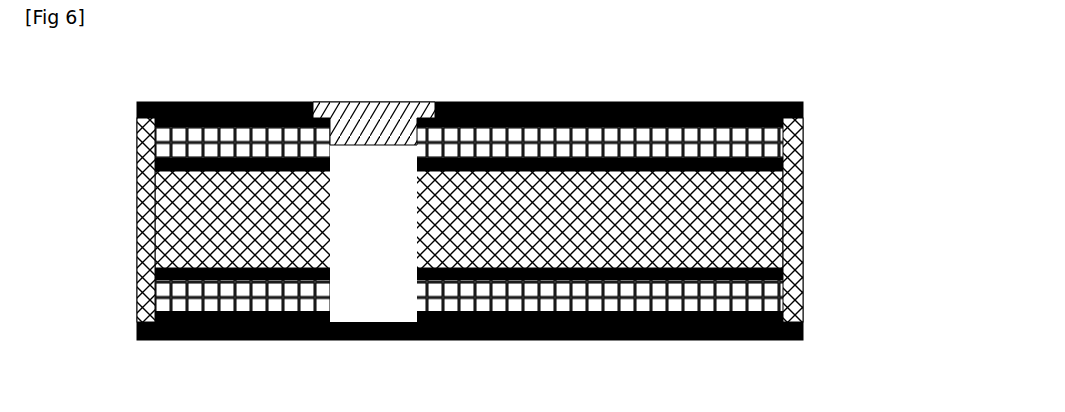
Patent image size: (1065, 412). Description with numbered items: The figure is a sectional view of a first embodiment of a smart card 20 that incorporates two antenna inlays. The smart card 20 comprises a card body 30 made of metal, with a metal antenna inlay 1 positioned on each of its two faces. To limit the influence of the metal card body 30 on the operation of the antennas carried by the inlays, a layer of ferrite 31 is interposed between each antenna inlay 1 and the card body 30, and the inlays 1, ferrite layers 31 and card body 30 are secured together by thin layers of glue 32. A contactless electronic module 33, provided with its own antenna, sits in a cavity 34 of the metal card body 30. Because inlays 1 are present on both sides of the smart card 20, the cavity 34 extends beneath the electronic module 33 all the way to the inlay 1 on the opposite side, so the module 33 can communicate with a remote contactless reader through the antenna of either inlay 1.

The antenna inlay 1 is at (160, 103).
The smart card 20 is at (849, 104).
The card body 30 is at (797, 215).
The layer of ferrite 31 is at (170, 143).
The layers of glue 32 is at (137, 185).
The electronic module 33 is at (370, 120).
The cavity 34 is at (370, 300).